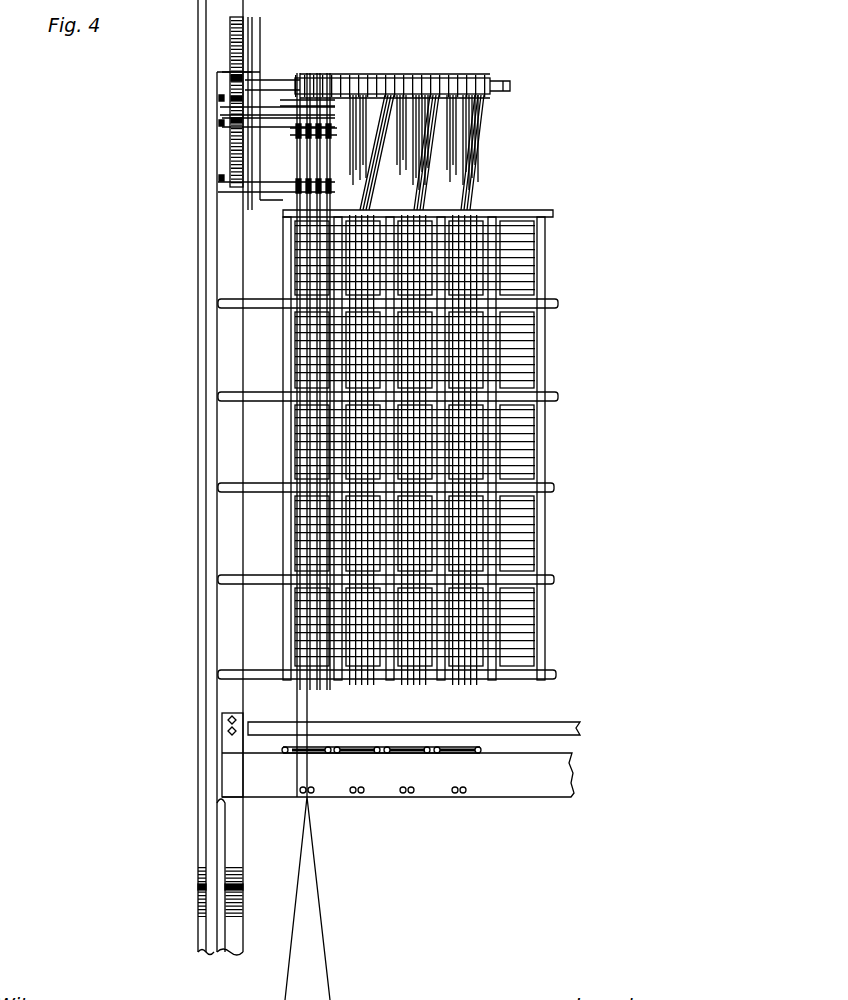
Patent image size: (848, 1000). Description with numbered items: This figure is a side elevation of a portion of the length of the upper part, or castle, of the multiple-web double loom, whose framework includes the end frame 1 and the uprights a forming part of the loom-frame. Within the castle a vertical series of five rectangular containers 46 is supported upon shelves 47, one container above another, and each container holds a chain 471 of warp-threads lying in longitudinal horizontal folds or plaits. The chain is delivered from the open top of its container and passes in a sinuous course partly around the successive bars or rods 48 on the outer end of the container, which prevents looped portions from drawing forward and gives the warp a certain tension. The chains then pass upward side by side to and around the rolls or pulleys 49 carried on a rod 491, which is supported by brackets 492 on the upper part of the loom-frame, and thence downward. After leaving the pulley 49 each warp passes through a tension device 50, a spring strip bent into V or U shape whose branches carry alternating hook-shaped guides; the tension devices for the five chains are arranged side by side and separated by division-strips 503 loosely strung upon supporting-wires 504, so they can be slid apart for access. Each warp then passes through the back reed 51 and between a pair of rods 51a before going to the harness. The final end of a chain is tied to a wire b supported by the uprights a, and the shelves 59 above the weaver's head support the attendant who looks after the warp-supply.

The end frame 1 is at (200, 840).
The rectangular container 46 is at (547, 258).
The shelf 47 is at (558, 304).
The bar or rod 48 is at (515, 340).
The roll or pulley 49 is at (375, 73).
The rod 491 is at (513, 86).
The bracket 492 is at (240, 59).
The chain of warp-threads 471 is at (437, 150).
The tension device 50 is at (293, 148).
The division-strip 503 is at (290, 181).
The supporting-wire 504 is at (270, 132).
The back reed 51 is at (315, 744).
The pair of rods 51a is at (421, 803).
The shelf 59 is at (255, 718).
The upright a is at (213, 462).
The wire b is at (263, 388).